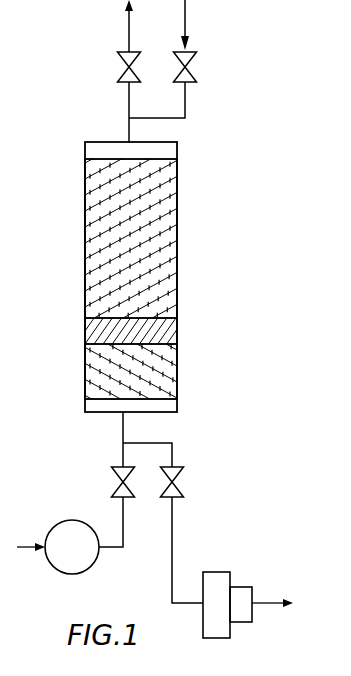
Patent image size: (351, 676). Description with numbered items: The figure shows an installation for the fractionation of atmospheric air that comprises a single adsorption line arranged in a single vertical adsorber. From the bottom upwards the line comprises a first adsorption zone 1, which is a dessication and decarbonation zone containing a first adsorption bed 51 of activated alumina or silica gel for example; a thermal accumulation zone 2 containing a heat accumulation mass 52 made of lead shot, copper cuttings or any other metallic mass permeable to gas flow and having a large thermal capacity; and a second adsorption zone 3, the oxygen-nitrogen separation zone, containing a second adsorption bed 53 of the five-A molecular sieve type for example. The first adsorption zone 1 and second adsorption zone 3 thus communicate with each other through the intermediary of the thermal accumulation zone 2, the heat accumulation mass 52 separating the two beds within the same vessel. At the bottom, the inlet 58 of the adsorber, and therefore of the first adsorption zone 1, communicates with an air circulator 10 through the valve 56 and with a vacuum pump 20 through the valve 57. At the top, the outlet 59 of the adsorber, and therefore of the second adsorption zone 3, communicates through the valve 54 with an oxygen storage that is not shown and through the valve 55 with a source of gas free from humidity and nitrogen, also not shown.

The first adsorption zone 1 is at (93, 365).
The thermal accumulation zone 2 is at (160, 330).
The second adsorption zone 3 is at (167, 218).
The air circulator 10 is at (95, 562).
The vacuum pump 20 is at (223, 571).
The first adsorption bed 51 is at (163, 367).
The heat accumulation mass 52 is at (88, 327).
The second adsorption bed 53 is at (117, 245).
The valve 54 is at (117, 66).
The valve 55 is at (196, 63).
The valve 56 is at (110, 480).
The valve 57 is at (184, 482).
The inlet 58 is at (167, 407).
The outlet 59 is at (171, 147).